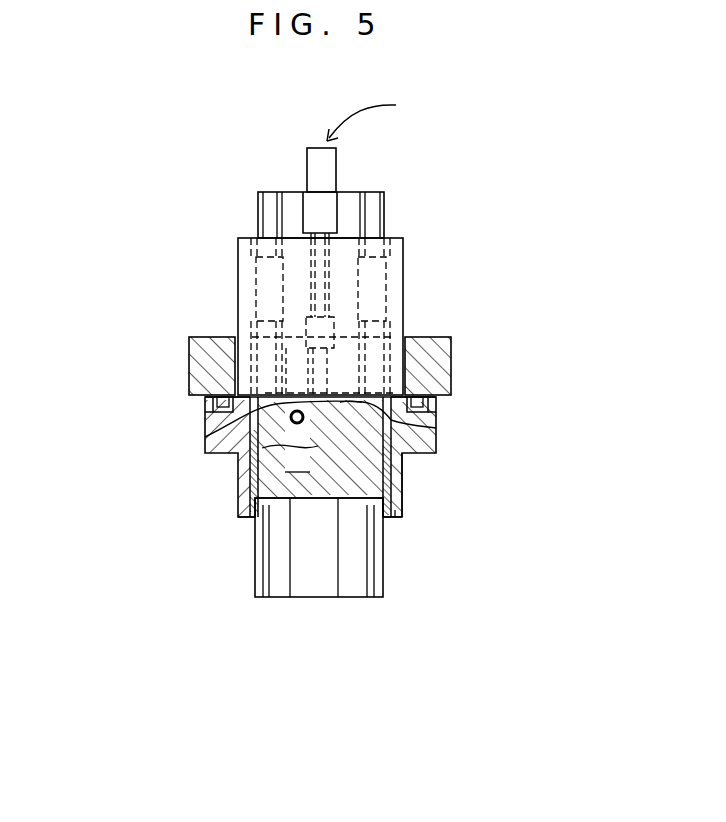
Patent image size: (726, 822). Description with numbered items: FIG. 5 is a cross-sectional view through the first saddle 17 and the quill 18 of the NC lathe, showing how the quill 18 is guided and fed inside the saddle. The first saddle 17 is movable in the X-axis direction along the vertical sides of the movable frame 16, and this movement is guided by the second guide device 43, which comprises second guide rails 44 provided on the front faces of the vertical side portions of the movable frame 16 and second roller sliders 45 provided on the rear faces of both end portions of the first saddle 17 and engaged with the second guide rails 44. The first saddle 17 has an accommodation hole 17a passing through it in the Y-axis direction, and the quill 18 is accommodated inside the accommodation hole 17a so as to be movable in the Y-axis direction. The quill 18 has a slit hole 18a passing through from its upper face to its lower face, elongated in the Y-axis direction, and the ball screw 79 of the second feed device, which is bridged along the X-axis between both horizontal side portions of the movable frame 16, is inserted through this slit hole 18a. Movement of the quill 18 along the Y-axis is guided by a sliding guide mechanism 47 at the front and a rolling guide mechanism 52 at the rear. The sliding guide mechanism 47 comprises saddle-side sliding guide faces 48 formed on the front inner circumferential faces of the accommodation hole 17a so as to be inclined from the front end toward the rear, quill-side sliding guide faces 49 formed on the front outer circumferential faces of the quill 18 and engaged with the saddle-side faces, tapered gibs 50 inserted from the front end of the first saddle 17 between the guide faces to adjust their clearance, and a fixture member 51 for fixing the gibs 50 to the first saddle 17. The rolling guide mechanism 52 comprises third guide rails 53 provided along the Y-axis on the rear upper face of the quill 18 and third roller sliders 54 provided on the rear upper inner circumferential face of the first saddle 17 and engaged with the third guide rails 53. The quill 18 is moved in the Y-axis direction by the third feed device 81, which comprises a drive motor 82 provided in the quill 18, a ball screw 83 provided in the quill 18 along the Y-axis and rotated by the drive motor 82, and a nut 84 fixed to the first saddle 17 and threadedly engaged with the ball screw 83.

The third feed device 81 is at (376, 118).
The drive motor 82 is at (305, 172).
The ball screw 83 is at (332, 253).
The third guide rails 53 is at (262, 212).
The rolling guide mechanism 52 is at (410, 232).
The third roller sliders 54 is at (258, 271).
The nut 84 is at (310, 325).
The movable frame 16 is at (196, 355).
The first saddle 17 is at (205, 432).
The accommodation hole 17a is at (362, 402).
The second guide rails 44 is at (215, 397).
The second guide device 43 is at (178, 407).
The second roller sliders 45 is at (205, 410).
The ball screw 79 is at (290, 420).
The slit hole 18a is at (252, 468).
The gibs 50 is at (402, 460).
The sliding guide mechanism 47 is at (410, 496).
The fixture member 51 is at (395, 518).
The saddle-side sliding guide faces 48 is at (362, 499).
The quill-side sliding guide faces 49 is at (383, 567).
The quill 18 is at (315, 597).